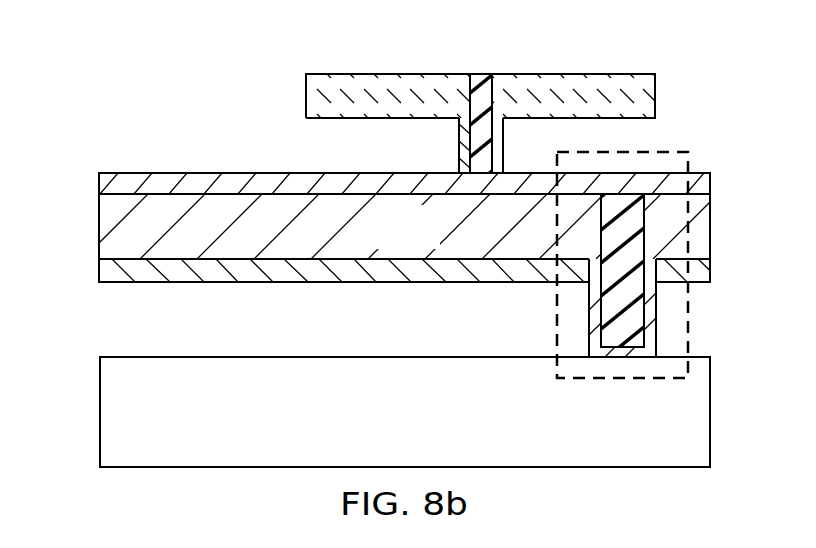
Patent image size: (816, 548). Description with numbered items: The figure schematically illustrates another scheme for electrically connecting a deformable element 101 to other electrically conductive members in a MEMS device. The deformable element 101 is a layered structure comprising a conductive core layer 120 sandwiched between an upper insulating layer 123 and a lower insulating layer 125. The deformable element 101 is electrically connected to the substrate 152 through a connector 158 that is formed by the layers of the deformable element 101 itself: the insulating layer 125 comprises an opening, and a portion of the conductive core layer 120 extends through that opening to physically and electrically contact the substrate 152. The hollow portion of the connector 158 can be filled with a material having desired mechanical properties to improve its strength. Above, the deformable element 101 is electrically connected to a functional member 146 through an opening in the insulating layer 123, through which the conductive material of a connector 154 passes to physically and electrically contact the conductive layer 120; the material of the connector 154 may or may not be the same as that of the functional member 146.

The deformable element 101 is at (250, 91).
The conductive core layer 120 is at (383, 238).
The insulating layer 123 is at (100, 183).
The insulating layer 125 is at (100, 271).
The functional member 146 is at (567, 73).
The substrate 152 is at (384, 425).
The connector 154 is at (480, 74).
The connector 158 is at (661, 150).